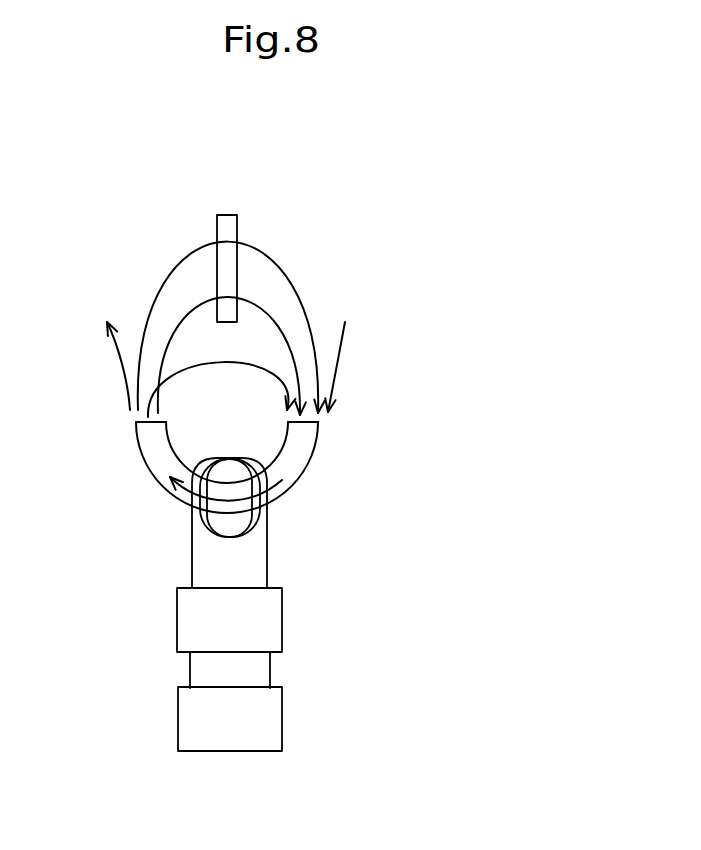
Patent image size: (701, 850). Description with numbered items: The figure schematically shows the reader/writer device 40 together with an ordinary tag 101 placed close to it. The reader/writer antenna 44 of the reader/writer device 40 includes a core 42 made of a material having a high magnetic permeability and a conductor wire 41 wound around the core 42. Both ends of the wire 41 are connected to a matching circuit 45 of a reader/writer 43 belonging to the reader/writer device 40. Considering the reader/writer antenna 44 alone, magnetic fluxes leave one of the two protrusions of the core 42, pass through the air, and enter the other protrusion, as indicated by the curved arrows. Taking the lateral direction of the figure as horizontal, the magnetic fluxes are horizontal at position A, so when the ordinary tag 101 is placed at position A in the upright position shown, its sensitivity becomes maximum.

The position A is at (207, 243).
The ordinary tag 101 is at (228, 232).
The reader/writer device 40 is at (259, 586).
The conductor wire 41 is at (189, 540).
The core 42 is at (163, 460).
The reader/writer antenna 44 is at (308, 473).
The matching circuit 45 is at (237, 626).
The reader/writer 43 is at (248, 722).